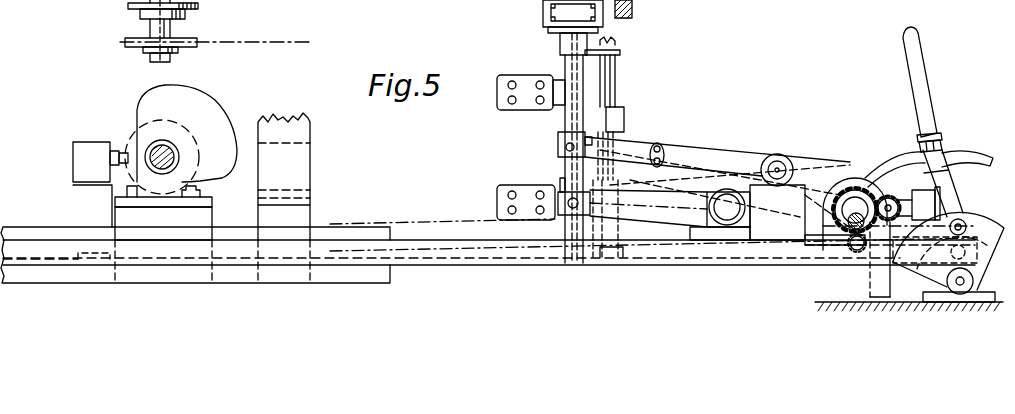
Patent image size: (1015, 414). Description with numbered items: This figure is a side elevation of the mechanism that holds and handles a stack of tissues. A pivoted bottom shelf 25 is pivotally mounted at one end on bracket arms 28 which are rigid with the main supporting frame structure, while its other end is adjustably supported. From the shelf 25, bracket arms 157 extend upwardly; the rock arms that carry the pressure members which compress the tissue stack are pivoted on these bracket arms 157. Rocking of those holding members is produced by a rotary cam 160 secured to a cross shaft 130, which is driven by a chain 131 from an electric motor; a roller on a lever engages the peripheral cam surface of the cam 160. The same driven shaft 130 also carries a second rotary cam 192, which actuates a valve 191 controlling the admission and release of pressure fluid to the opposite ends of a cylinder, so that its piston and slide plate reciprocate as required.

The pivoted bottom shelf 25 is at (462, 262).
The bracket arms 28 is at (238, 277).
The cross shaft 130 is at (150, 148).
The chain 131 is at (270, 38).
The bracket arms 157 is at (302, 136).
The rotary cam 160 is at (186, 98).
The valve 191 is at (88, 162).
The rotary cam 192 is at (192, 127).